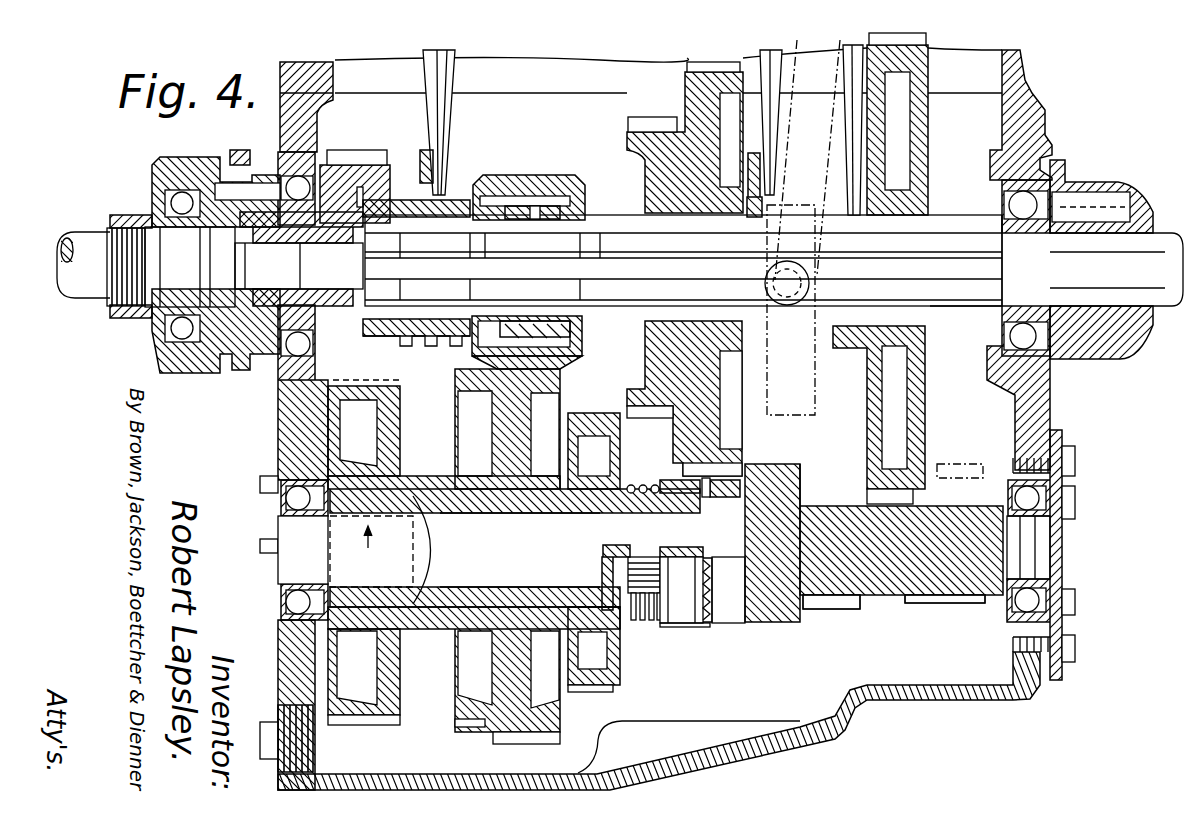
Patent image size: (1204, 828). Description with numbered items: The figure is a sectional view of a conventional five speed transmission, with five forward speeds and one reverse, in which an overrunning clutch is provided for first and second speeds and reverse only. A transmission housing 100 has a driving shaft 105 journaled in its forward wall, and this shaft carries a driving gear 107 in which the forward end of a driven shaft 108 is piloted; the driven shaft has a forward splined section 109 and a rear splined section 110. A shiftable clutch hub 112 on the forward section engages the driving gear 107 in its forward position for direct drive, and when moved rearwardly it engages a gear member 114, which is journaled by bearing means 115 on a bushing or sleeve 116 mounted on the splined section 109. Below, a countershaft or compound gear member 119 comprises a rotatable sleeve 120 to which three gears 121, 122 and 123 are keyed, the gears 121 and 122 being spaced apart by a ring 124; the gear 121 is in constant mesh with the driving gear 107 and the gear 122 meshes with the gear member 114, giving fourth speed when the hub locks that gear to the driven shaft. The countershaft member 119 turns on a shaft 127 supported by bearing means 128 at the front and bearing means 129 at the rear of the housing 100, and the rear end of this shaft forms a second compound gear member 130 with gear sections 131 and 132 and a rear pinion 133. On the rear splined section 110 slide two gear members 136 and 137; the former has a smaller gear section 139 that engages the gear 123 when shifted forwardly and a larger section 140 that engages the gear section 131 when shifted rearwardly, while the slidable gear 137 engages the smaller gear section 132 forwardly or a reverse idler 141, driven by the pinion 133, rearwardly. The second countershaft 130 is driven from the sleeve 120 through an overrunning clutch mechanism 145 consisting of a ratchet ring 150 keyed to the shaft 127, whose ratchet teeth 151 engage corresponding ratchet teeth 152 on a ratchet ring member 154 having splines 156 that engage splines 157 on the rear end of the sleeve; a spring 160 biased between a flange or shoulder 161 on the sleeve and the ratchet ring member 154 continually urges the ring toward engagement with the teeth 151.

The transmission housing 100 is at (280, 435).
The driving shaft 105 is at (78, 232).
The driving gear 107 is at (348, 152).
The driven shaft 108 is at (612, 214).
The forward splined section 109 is at (432, 340).
The rear splined section 110 is at (958, 308).
The shiftable clutch hub 112 is at (446, 200).
The gear member 114 is at (507, 172).
The bearing means 115 is at (532, 202).
The bushing or sleeve 116 is at (520, 320).
The countershaft or compound gear member 119 is at (419, 470).
The rotatable sleeve 120 is at (436, 541).
The gear 121 is at (367, 724).
The gear 122 is at (490, 731).
The gear 123 is at (620, 676).
The ring 124 is at (440, 635).
The shaft 127 is at (556, 549).
The bearing means 128 is at (290, 500).
The bearing means 129 is at (1052, 494).
The second compound gear member 130 is at (803, 482).
The gear section 131 is at (752, 630).
The gear section 132 is at (842, 612).
The rear pinion 133 is at (963, 606).
The gear member 136 is at (745, 379).
The slidable gear 137 is at (922, 412).
The smaller gear section 139 is at (648, 419).
The larger section 140 is at (730, 446).
The reverse idler 141 is at (962, 464).
The overrunning clutch mechanism 145 is at (690, 628).
The ratchet ring 150 is at (722, 625).
The ratchet teeth 151 is at (708, 565).
The ratchet teeth 152 is at (709, 584).
The ratchet ring member 154 is at (675, 627).
The splines 156 is at (677, 547).
The splines 157 is at (642, 577).
The spring 160 is at (645, 620).
The flange or shoulder 161 is at (653, 483).